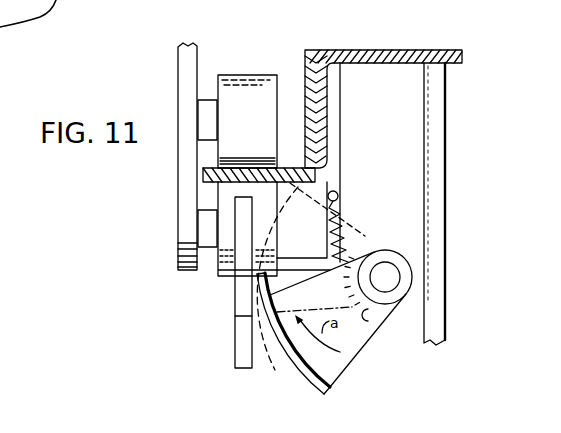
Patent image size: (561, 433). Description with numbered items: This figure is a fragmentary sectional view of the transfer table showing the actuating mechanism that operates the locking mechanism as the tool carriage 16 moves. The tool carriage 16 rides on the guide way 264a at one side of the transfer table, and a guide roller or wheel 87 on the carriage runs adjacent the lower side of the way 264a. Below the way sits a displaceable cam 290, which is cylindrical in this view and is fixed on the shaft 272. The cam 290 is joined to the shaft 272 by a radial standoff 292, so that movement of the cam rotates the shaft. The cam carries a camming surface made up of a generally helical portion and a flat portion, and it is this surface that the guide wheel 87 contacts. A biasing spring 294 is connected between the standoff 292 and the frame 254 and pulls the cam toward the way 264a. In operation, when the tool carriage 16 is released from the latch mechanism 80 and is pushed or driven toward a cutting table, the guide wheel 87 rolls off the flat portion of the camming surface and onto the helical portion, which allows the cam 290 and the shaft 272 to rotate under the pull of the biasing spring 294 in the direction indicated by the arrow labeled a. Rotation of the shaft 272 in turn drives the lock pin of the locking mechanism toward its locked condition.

The tool carriage 16 is at (178, 63).
The latch mechanism 80 is at (227, 318).
The guide roller 87 is at (213, 192).
The frame 254 is at (420, 46).
The guide way 264a is at (306, 60).
The shaft 272 is at (400, 274).
The cam 290 is at (289, 348).
The radial standoff 292 is at (360, 346).
The biasing spring 294 is at (352, 206).